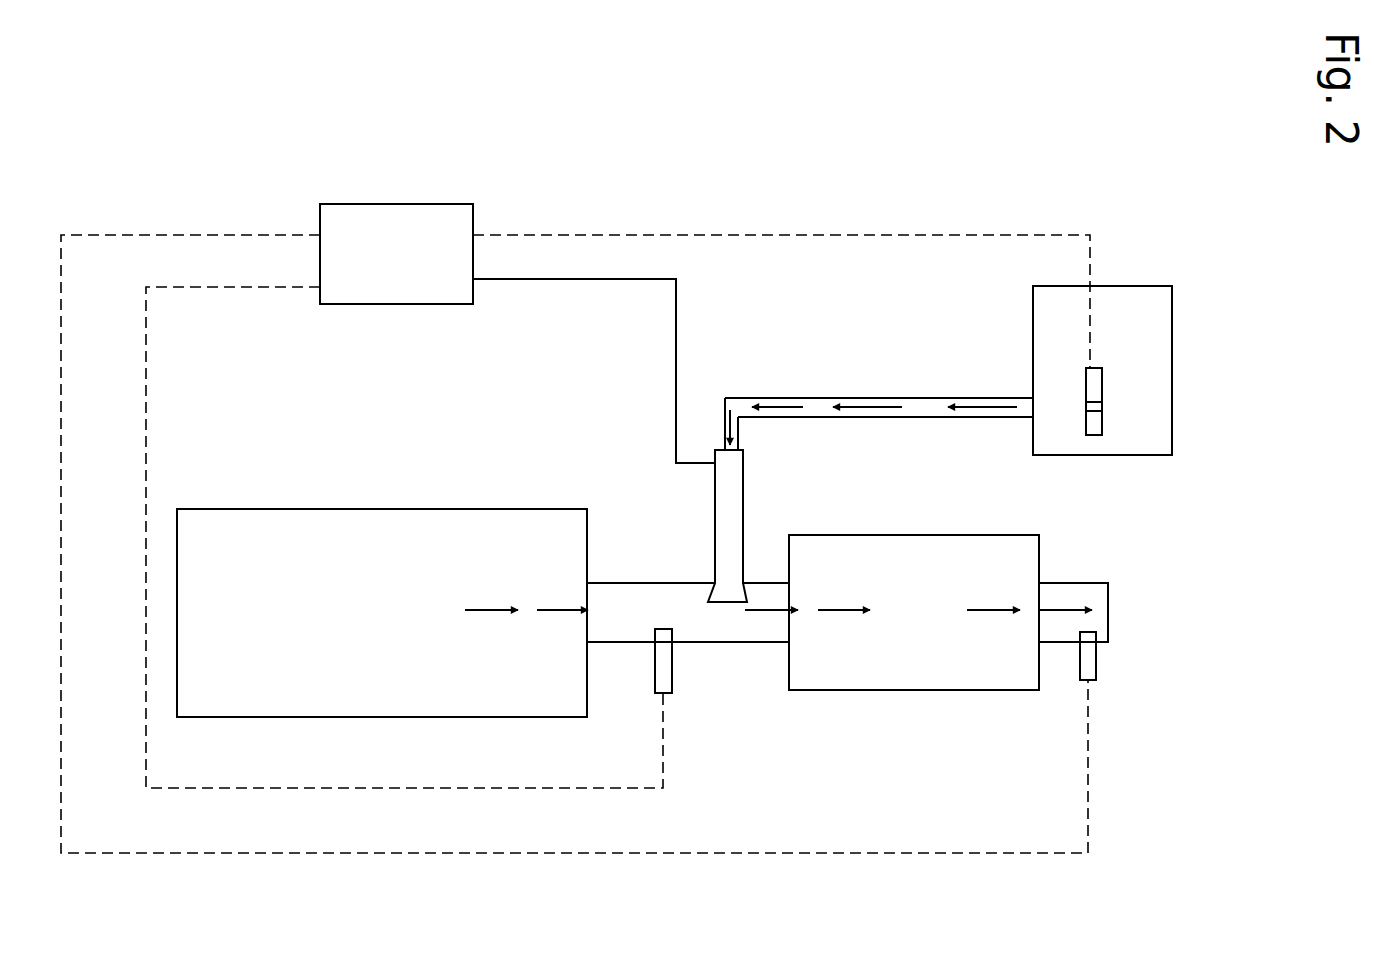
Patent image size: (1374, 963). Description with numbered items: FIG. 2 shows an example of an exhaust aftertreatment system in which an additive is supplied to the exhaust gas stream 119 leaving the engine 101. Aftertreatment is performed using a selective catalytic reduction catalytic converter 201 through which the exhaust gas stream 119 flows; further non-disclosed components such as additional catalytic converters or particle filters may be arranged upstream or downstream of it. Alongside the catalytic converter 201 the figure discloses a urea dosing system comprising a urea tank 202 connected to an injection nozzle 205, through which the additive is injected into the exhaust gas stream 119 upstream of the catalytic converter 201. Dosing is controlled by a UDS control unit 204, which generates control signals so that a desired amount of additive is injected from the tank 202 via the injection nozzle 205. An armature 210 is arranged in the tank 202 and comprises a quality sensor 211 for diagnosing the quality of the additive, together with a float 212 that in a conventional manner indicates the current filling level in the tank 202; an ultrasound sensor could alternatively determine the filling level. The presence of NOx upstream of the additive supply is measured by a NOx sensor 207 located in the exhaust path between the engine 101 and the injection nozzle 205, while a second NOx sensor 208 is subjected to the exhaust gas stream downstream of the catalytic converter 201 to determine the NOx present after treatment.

The internal combustion engine 101 is at (408, 655).
The exhaust gas stream 119 is at (492, 608).
The selective catalytic reduction (SCR) catalytic converter 201 is at (970, 662).
The urea tank 202 is at (1129, 310).
The UDS control unit 204 is at (407, 287).
The injection nozzle 205 is at (723, 555).
The NOx sensor 207 is at (663, 666).
The NOx sensor 208 is at (1090, 665).
The armature 210 is at (1093, 382).
The quality sensor 211 is at (1090, 430).
The float 212 is at (1095, 405).